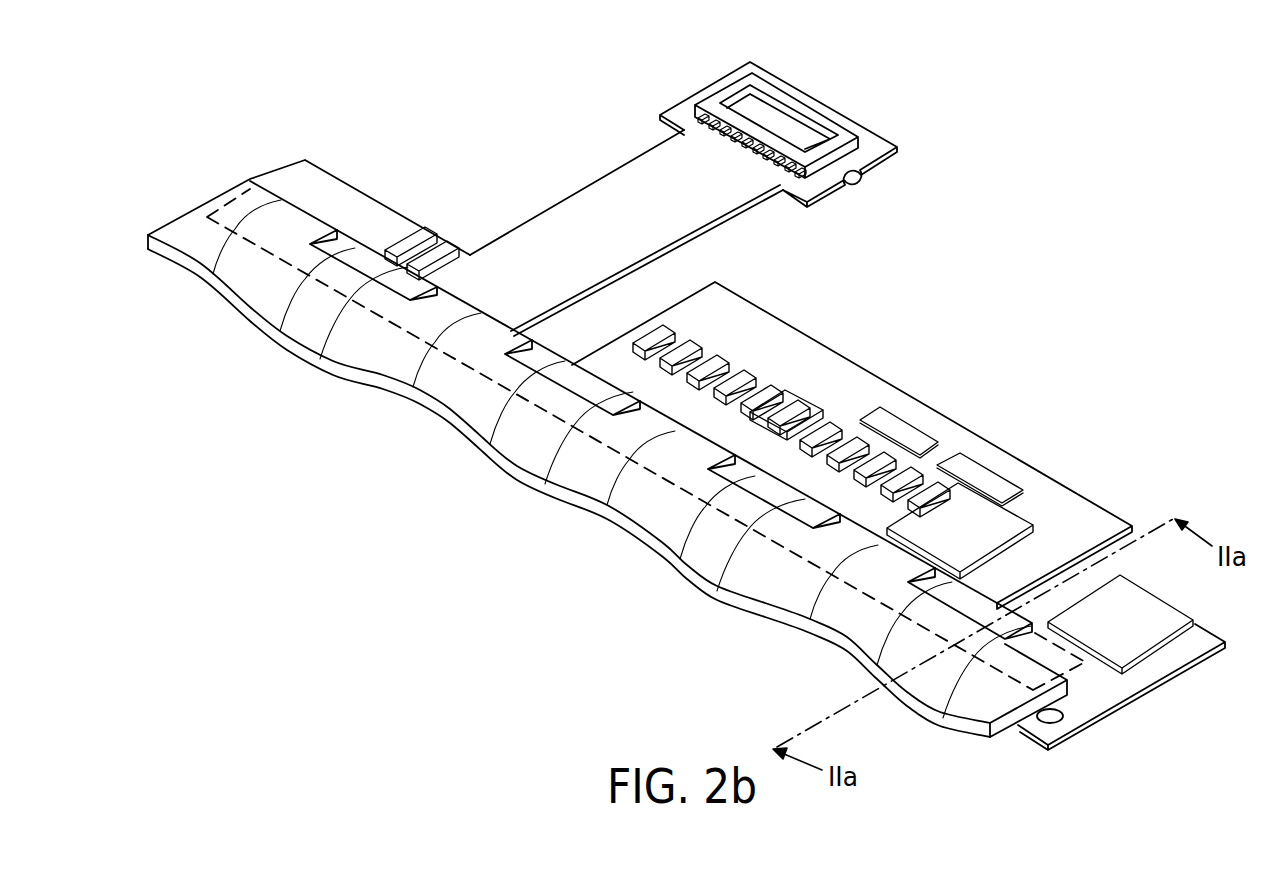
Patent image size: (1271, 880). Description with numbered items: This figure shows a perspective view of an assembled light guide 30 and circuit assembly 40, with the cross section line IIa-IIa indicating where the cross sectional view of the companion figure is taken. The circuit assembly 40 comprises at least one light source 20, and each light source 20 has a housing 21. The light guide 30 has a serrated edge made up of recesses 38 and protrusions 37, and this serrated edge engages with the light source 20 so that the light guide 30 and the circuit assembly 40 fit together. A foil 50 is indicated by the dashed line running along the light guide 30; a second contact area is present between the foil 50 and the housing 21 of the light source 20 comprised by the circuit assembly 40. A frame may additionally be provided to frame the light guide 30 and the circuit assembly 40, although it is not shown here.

The light source 20 is at (615, 369).
The housing 21 is at (943, 719).
The light guide 30 is at (190, 233).
The protrusions 37 is at (810, 621).
The recesses 38 is at (877, 667).
The circuit assembly 40 is at (567, 176).
The foil 50 is at (237, 178).